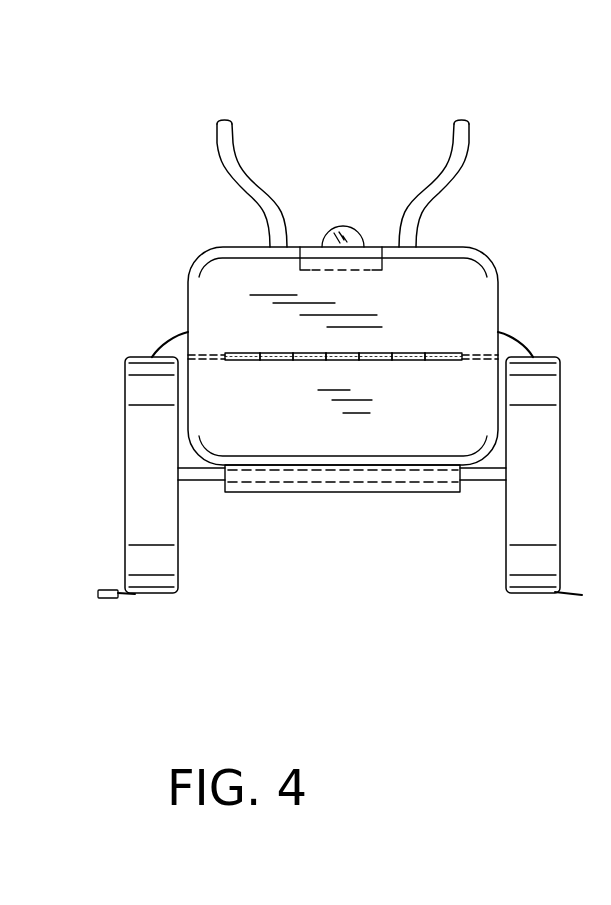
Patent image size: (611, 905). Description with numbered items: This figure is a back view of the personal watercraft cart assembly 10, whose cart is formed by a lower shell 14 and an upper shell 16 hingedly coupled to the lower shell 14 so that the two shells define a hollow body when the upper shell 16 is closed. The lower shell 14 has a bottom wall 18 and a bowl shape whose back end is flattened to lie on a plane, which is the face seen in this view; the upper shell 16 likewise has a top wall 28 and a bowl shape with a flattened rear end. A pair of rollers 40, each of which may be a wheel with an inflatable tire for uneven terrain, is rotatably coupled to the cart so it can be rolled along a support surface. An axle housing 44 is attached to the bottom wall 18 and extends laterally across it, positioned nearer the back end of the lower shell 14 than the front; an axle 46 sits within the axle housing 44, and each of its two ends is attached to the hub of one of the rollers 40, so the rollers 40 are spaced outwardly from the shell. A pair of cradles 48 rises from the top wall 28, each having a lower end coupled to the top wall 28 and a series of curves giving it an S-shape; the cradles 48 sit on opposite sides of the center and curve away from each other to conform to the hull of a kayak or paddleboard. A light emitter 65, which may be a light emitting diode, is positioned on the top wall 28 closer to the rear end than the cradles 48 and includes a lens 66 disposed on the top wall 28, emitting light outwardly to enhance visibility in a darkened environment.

The personal watercraft cart assembly 10 is at (293, 357).
The lower shell 14 is at (200, 462).
The upper shell 16 is at (200, 252).
The bottom wall 18 is at (423, 467).
The top wall 28 is at (303, 247).
The rollers 40 is at (127, 363).
The axle housing 44 is at (325, 492).
The axle 46 is at (203, 482).
The cradles 48 is at (212, 142).
The light emitter 65 is at (362, 225).
The lens 66 is at (333, 226).